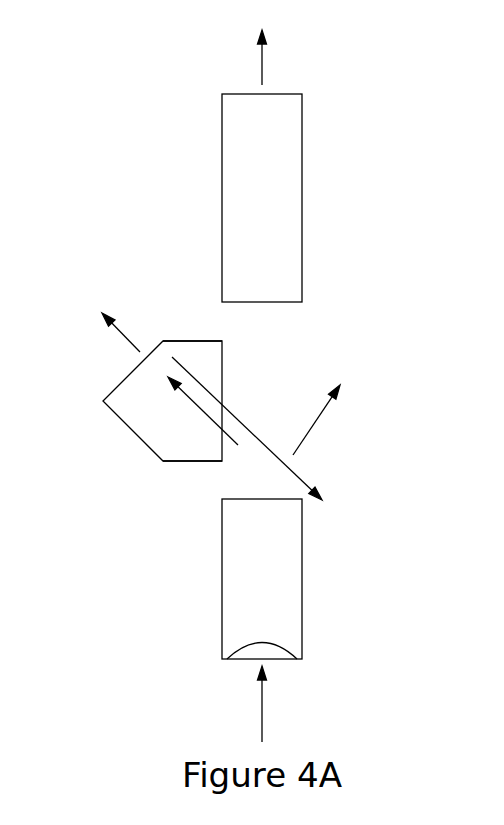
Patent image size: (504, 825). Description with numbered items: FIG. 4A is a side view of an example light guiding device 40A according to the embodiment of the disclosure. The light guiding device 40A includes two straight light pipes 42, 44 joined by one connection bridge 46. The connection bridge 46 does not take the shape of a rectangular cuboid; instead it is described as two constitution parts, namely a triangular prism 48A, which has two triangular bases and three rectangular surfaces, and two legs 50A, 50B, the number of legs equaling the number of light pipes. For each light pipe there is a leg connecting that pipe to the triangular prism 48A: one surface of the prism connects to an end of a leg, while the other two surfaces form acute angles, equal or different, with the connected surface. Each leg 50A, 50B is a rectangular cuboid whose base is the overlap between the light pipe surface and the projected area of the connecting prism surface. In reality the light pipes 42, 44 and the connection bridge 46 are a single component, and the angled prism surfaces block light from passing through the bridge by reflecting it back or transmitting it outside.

The light guiding device 40A is at (251, 386).
The straight light pipe 42 is at (222, 200).
The straight light pipe 44 is at (233, 581).
The connection bridge 46 is at (142, 403).
The triangular prism 48A is at (127, 377).
The leg 50A is at (193, 461).
The leg 50B is at (193, 341).